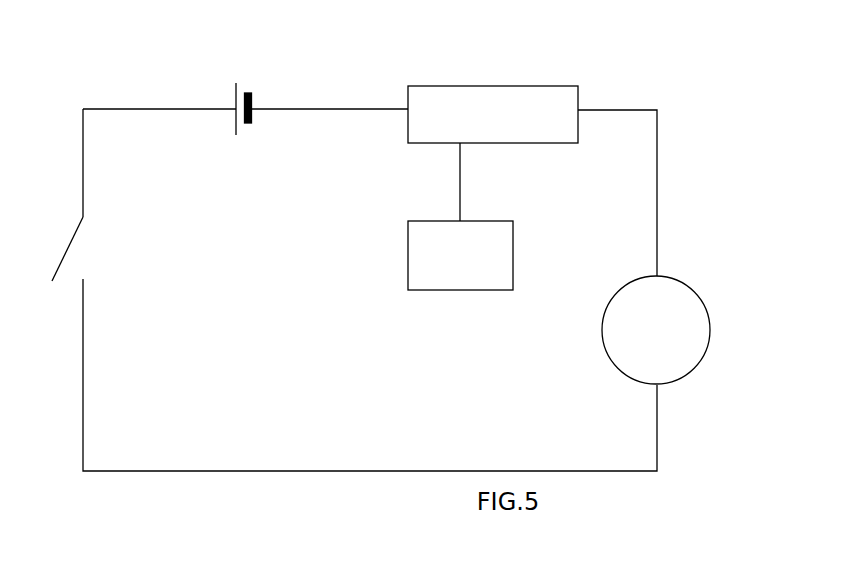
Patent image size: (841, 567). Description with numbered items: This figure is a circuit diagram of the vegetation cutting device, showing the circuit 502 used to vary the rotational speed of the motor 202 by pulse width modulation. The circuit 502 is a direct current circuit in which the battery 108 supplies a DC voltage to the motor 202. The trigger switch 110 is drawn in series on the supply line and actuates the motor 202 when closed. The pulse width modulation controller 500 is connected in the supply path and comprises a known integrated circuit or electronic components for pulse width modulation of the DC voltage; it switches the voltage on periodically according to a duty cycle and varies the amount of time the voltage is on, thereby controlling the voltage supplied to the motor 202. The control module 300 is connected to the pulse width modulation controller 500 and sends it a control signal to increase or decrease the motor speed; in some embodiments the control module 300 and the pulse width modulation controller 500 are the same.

The battery 108 is at (236, 100).
The trigger switch 110 is at (72, 243).
The pulse width modulation controller 500 is at (459, 130).
The control module 300 is at (430, 270).
The motor 202 is at (685, 345).
The circuit 502 is at (695, 172).